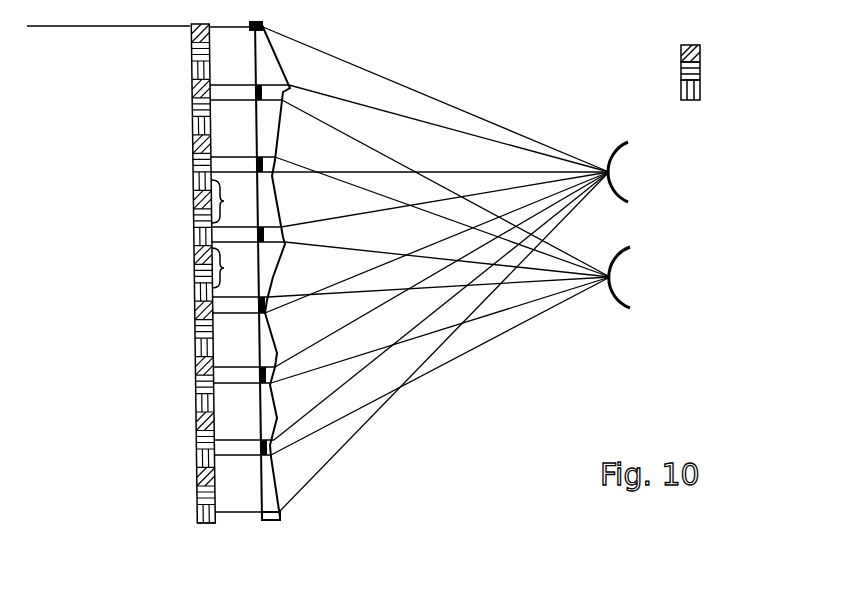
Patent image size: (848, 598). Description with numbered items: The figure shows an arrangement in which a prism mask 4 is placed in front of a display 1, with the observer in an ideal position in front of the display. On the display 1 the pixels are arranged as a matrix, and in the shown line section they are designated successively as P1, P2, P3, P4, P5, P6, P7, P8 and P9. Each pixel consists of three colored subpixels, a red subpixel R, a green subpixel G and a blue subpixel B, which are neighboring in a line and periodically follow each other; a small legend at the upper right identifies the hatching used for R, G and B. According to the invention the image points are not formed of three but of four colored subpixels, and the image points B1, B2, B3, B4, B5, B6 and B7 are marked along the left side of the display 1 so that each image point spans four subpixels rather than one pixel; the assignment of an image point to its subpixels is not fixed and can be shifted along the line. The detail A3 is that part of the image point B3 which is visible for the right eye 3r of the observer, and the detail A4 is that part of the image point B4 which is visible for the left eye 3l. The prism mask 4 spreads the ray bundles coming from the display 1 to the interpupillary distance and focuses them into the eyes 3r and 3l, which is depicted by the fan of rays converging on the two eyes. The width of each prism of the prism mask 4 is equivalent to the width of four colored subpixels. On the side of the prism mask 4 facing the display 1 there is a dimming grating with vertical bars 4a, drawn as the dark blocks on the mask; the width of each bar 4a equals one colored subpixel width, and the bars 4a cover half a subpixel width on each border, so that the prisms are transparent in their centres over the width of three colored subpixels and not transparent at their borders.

The display 1 is at (123, 300).
The prism mask 4 is at (266, 299).
The bars 4a is at (259, 465).
The right eye 3r is at (641, 172).
The left eye 3l is at (644, 277).
The pixel P1 is at (155, 51).
The pixel P2 is at (156, 106).
The pixel P3 is at (157, 162).
The pixel P4 is at (122, 217).
The pixel P5 is at (160, 273).
The pixel P6 is at (161, 328).
The pixel P7 is at (162, 384).
The pixel P8 is at (127, 439).
The pixel P9 is at (165, 495).
The image point B1 is at (100, 98).
The image point B2 is at (100, 168).
The image point B3 is at (100, 240).
The image point B4 is at (105, 310).
The image point B5 is at (105, 382).
The image point B6 is at (105, 452).
The image point B7 is at (108, 524).
The detail A3 is at (232, 201).
The detail A4 is at (232, 268).
The red colored subpixel R is at (700, 53).
The green colored subpixel G is at (700, 71).
The blue colored subpixel B is at (700, 88).